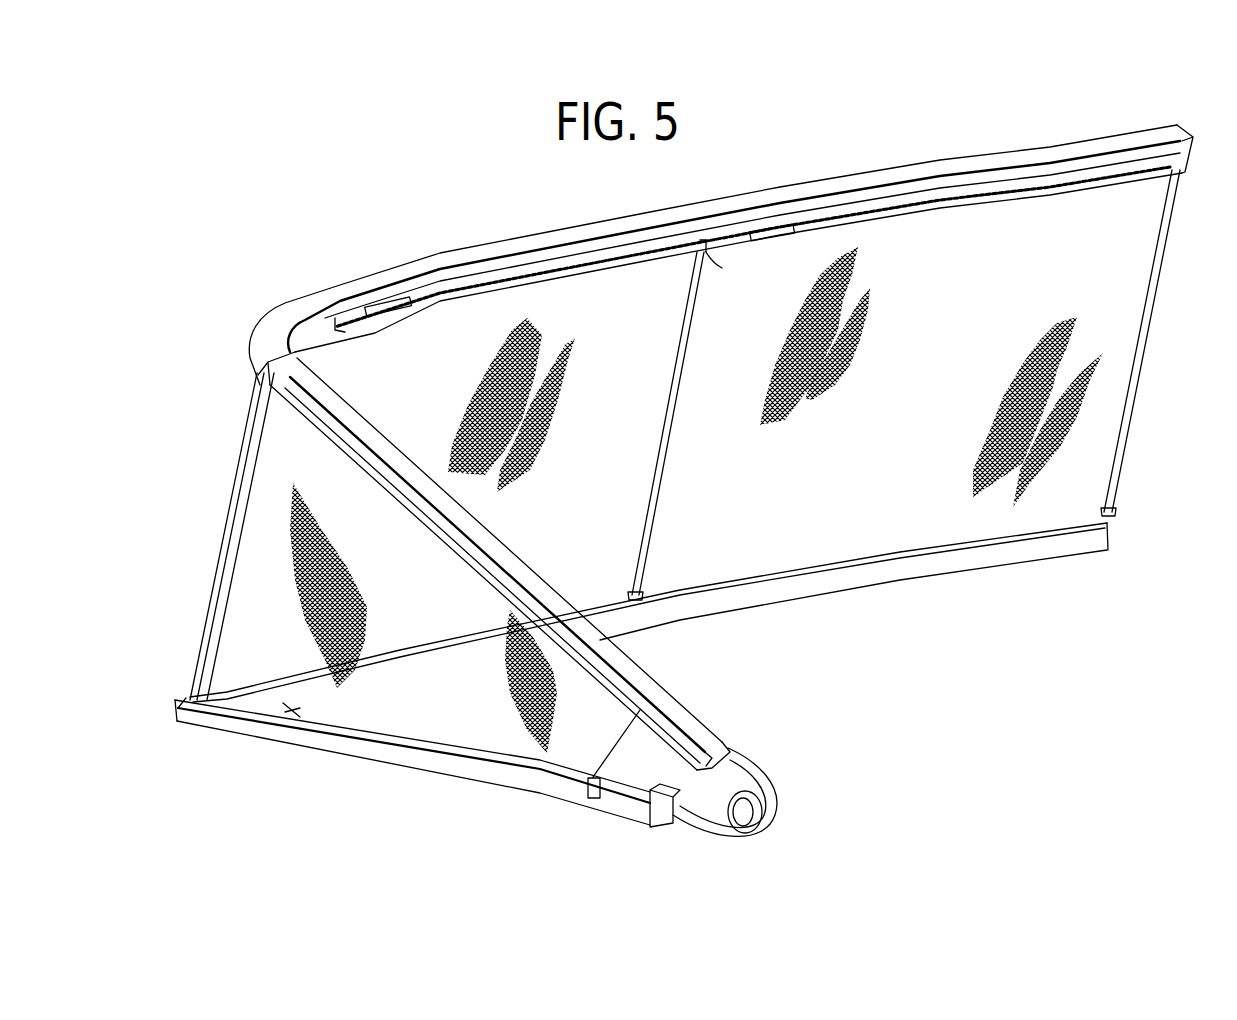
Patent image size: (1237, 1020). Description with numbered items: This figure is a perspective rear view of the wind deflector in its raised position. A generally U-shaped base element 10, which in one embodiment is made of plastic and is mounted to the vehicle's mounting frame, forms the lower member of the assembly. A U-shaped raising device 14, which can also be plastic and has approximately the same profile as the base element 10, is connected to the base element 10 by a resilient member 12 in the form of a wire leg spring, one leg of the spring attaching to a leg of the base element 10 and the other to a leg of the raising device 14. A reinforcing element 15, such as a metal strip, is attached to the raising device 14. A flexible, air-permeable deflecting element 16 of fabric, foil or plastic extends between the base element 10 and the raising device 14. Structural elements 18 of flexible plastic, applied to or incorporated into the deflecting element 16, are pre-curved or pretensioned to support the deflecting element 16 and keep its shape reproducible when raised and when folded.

The base element 10 is at (1029, 547).
The resilient member 12 is at (762, 812).
The raising device 14 is at (1031, 153).
The reinforcing element 15 is at (863, 208).
The deflecting element 16 is at (1135, 255).
The structural elements 18 is at (702, 266).